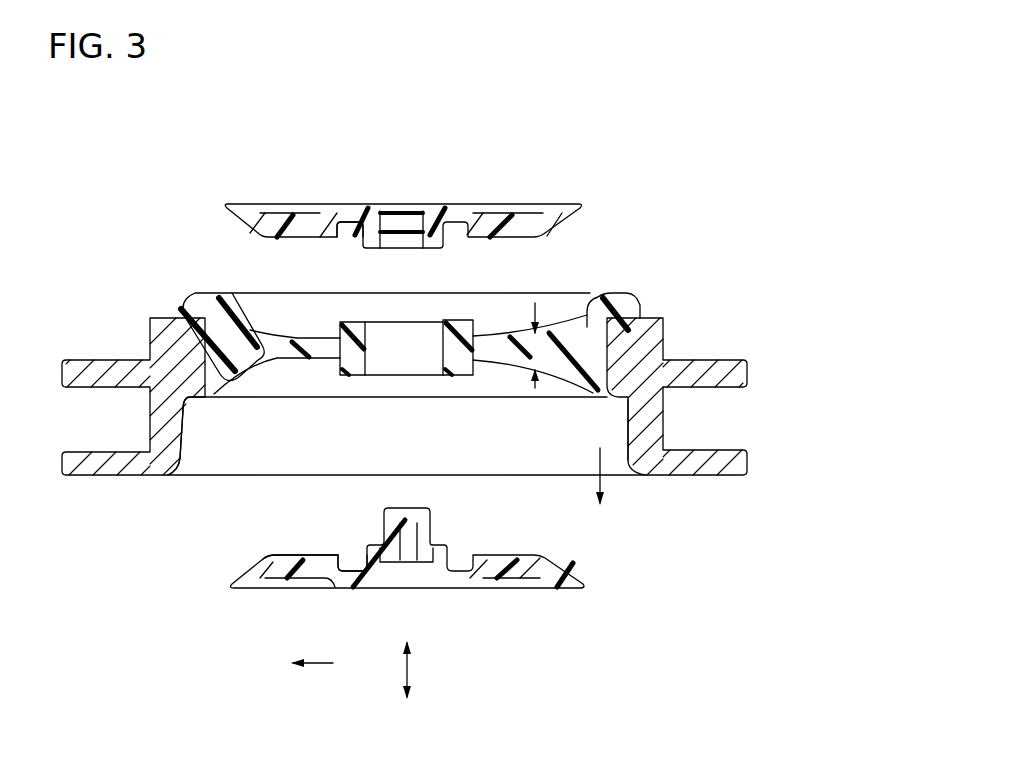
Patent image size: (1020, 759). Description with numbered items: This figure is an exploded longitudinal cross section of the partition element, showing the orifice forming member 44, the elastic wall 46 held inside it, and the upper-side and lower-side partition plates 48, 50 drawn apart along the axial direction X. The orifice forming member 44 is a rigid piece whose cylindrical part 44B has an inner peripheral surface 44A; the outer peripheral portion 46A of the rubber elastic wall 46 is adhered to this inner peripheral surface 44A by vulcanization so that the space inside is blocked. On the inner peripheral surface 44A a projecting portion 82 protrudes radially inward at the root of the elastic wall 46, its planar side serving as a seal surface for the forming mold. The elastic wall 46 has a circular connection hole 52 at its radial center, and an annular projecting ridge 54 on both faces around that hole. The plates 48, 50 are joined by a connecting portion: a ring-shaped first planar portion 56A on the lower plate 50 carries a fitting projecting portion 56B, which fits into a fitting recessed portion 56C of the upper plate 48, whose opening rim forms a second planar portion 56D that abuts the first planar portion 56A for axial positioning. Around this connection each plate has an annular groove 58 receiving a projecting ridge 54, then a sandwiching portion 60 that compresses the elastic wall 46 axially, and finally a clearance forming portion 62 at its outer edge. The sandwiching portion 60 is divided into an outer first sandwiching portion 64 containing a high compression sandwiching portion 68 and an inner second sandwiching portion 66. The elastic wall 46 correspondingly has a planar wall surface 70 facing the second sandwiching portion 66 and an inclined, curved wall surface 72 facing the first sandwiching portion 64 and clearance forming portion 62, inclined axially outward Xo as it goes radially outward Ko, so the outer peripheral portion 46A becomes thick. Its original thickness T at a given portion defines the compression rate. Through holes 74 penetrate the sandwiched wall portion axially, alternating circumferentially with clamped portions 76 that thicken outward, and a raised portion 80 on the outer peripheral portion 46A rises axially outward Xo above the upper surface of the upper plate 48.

The orifice forming member 44 is at (702, 362).
The inner peripheral surface 44A is at (620, 463).
The cylindrical part 44B is at (657, 431).
The elastic wall 46 is at (585, 298).
The outer peripheral portion 46A is at (640, 303).
The upper-side partition plate 48 is at (555, 188).
The lower-side partition plate 50 is at (538, 605).
The connection hole 52 is at (435, 353).
The projecting ridge 54 is at (458, 320).
The first planar portion 56A is at (433, 543).
The fitting projecting portion 56B is at (412, 516).
The fitting recessed portion 56C is at (407, 232).
The second planar portion 56D is at (440, 247).
The annular groove 58 is at (348, 228).
The sandwiching portion 60 is at (315, 568).
The clearance forming portion 62 is at (237, 221).
The first sandwiching portion 64 is at (277, 238).
The second sandwiching portion 66 is at (335, 208).
The high compression sandwiching portion 68 is at (260, 552).
The wall surface 70 is at (495, 337).
The wall surface 72 is at (548, 372).
The through hole 74 is at (274, 362).
The clamped portion 76 is at (547, 333).
The raised portion 80 is at (190, 300).
The projecting portion 82 is at (203, 400).
The original thickness T is at (527, 372).
The axially outward direction Xo is at (578, 478).
The radially outward direction Ko is at (312, 677).
The axial direction X is at (417, 670).